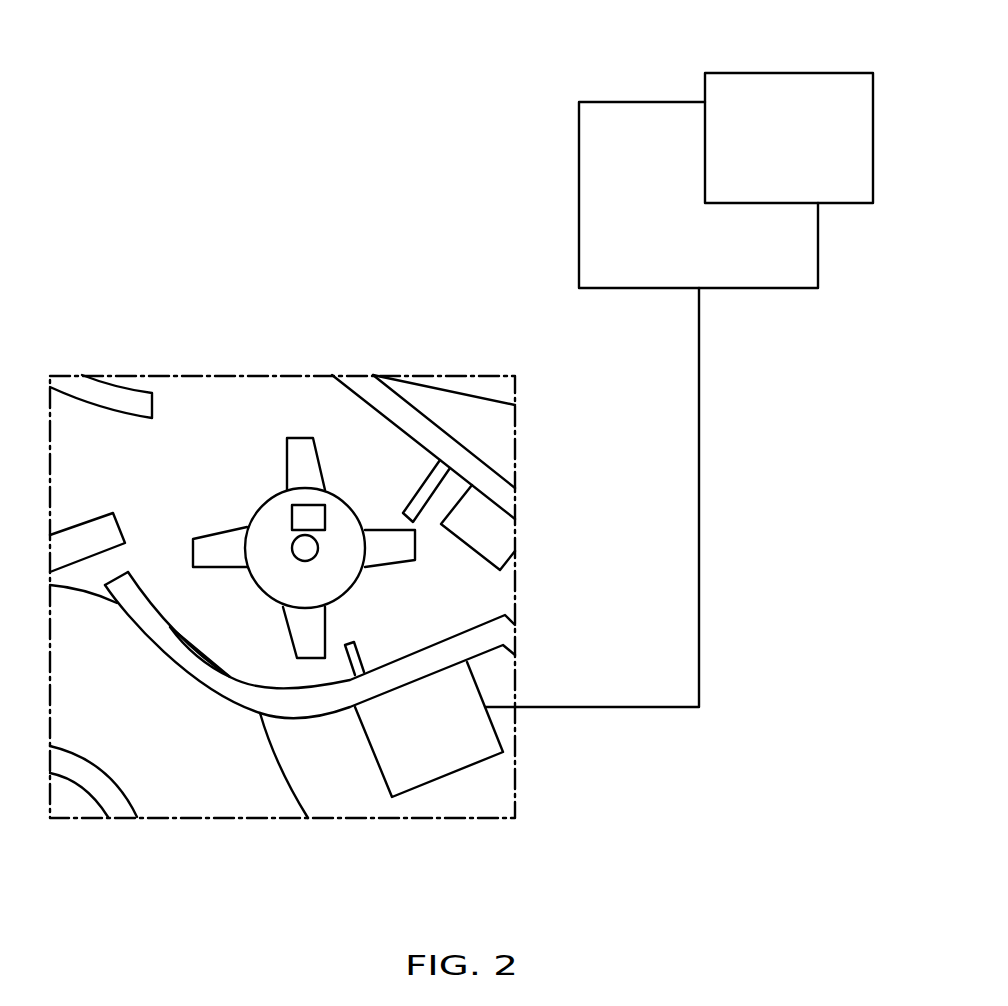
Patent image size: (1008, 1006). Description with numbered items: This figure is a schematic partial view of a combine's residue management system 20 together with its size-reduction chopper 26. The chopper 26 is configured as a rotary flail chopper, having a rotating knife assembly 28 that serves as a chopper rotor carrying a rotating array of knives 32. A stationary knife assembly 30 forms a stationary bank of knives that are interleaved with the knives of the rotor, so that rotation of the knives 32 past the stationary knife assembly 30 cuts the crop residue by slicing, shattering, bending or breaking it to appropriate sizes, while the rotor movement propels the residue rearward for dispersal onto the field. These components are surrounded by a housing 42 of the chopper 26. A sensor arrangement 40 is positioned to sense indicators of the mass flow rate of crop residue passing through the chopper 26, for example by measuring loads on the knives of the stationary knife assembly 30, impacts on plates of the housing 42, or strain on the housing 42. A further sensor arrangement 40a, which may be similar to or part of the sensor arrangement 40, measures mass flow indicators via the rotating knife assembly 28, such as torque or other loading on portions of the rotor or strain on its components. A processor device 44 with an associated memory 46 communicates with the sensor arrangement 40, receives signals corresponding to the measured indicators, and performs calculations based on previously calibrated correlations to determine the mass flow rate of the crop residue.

The machining system 20 is at (587, 760).
The chopper 26 is at (162, 357).
The rotating knife assembly 28 is at (268, 587).
The stationary knife assembly 30 is at (357, 652).
The knives 32 is at (287, 452).
The sensor arrangement 40 is at (368, 753).
The sensor arrangement 40a is at (290, 517).
The housing 42 is at (298, 710).
The processor device 44 is at (578, 195).
The memory 46 is at (787, 72).